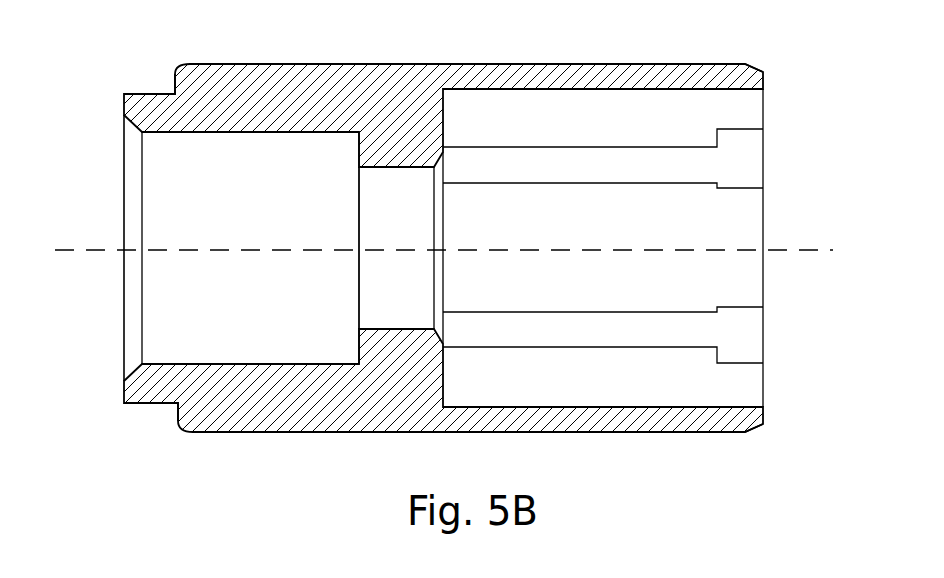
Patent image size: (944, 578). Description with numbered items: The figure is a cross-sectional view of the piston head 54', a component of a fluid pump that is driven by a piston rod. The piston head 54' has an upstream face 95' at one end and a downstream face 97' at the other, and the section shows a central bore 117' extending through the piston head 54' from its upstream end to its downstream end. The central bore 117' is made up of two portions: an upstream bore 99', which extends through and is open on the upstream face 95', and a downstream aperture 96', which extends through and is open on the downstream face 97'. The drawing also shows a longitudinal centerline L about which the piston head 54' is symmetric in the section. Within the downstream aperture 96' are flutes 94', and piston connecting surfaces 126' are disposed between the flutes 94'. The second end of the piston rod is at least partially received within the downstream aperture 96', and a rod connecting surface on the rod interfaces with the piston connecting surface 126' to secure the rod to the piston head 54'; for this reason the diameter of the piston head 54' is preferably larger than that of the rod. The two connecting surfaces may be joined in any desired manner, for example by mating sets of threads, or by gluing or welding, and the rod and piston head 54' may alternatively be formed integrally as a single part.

The piston head 54' is at (443, 223).
The upstream face 95' is at (126, 230).
The central bore 117' is at (121, 248).
The upstream bore 99' is at (206, 248).
The flutes 94' is at (603, 242).
The downstream aperture 96' is at (779, 248).
The downstream face 97' is at (797, 244).
The piston connecting surface 126' is at (660, 246).
The longitudinal axis L is at (446, 250).